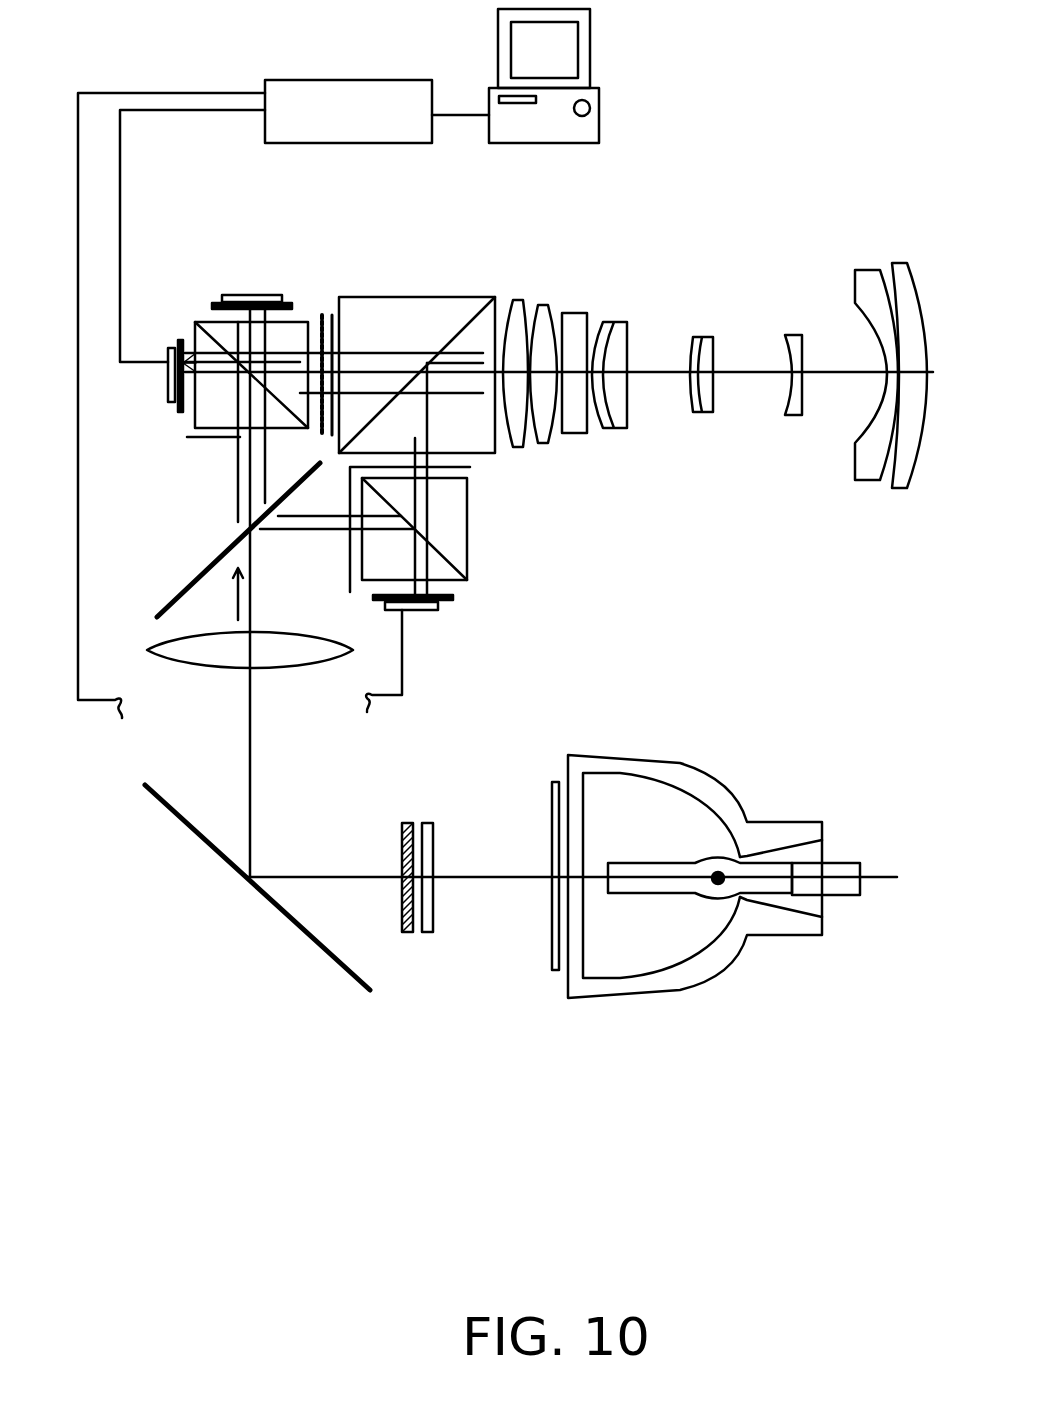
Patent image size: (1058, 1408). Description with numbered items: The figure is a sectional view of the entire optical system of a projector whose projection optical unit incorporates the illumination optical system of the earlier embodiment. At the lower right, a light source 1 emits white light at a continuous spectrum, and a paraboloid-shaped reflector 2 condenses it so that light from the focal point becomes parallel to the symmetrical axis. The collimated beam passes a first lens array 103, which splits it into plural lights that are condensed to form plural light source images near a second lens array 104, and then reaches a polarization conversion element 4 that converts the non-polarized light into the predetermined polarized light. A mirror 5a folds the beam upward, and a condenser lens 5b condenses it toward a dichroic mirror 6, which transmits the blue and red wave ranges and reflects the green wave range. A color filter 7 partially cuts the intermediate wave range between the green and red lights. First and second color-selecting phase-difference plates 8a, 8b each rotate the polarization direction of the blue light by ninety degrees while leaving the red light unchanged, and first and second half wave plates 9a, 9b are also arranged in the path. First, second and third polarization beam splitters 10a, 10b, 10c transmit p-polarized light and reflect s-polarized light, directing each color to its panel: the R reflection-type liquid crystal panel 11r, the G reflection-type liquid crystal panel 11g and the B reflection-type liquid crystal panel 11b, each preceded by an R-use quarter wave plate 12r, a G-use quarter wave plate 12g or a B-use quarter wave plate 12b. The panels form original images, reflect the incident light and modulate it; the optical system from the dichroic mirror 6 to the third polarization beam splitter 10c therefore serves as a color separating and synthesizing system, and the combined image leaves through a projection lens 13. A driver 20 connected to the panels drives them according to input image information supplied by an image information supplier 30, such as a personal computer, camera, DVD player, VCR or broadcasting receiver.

The light source 1 is at (760, 887).
The reflector 2 is at (702, 962).
The polarization conversion element 4 is at (407, 933).
The second lens array 104 is at (427, 933).
The first lens array 103 is at (552, 973).
The mirror 5a is at (335, 962).
The condenser lens 5b is at (297, 667).
The dichroic mirror 6 is at (200, 570).
The color filter 7 is at (345, 558).
The first color-selecting phase-difference plate 8a is at (188, 437).
The second color-selecting phase-difference plate 8b is at (318, 317).
The first half wave plate 9a is at (468, 470).
The second half wave plate 9b is at (328, 317).
The first polarization beam splitter 10a is at (463, 535).
The second polarization beam splitter 10b is at (210, 322).
The third polarization beam splitter 10c is at (417, 303).
The B reflection-type liquid crystal panel 11b is at (237, 295).
The G reflection-type liquid crystal panel 11g is at (433, 610).
The R reflection-type liquid crystal panel 11r is at (163, 403).
The B-use quarter wave plate 12b is at (295, 302).
The G-use quarter wave plate 12g is at (452, 605).
The R-use quarter wave plate 12r is at (170, 347).
The projection lens 13 is at (667, 423).
The driver 20 is at (340, 83).
The image information supplier 30 is at (585, 45).